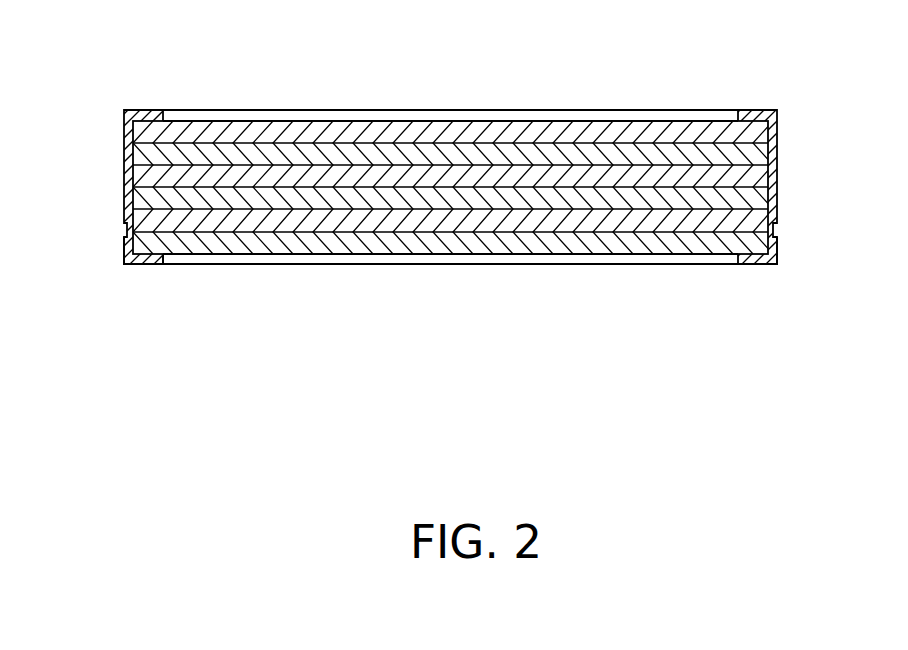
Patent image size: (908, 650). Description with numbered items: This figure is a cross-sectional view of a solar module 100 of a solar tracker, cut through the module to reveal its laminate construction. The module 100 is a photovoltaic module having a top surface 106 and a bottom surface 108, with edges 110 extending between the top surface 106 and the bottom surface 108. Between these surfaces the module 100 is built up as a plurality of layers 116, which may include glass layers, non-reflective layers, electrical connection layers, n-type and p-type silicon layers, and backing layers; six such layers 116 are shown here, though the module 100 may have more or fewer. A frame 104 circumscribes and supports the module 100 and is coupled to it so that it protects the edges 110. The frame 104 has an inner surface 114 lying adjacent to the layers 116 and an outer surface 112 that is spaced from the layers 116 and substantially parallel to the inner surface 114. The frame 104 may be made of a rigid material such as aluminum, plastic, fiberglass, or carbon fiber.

The solar module 100 is at (176, 62).
The frame 104 is at (137, 110).
The top surface 106 is at (492, 121).
The bottom surface 108 is at (462, 254).
The edges 110 is at (768, 168).
The outer surface 112 is at (124, 250).
The inner surface 114 is at (133, 238).
The layers 116 is at (758, 137).